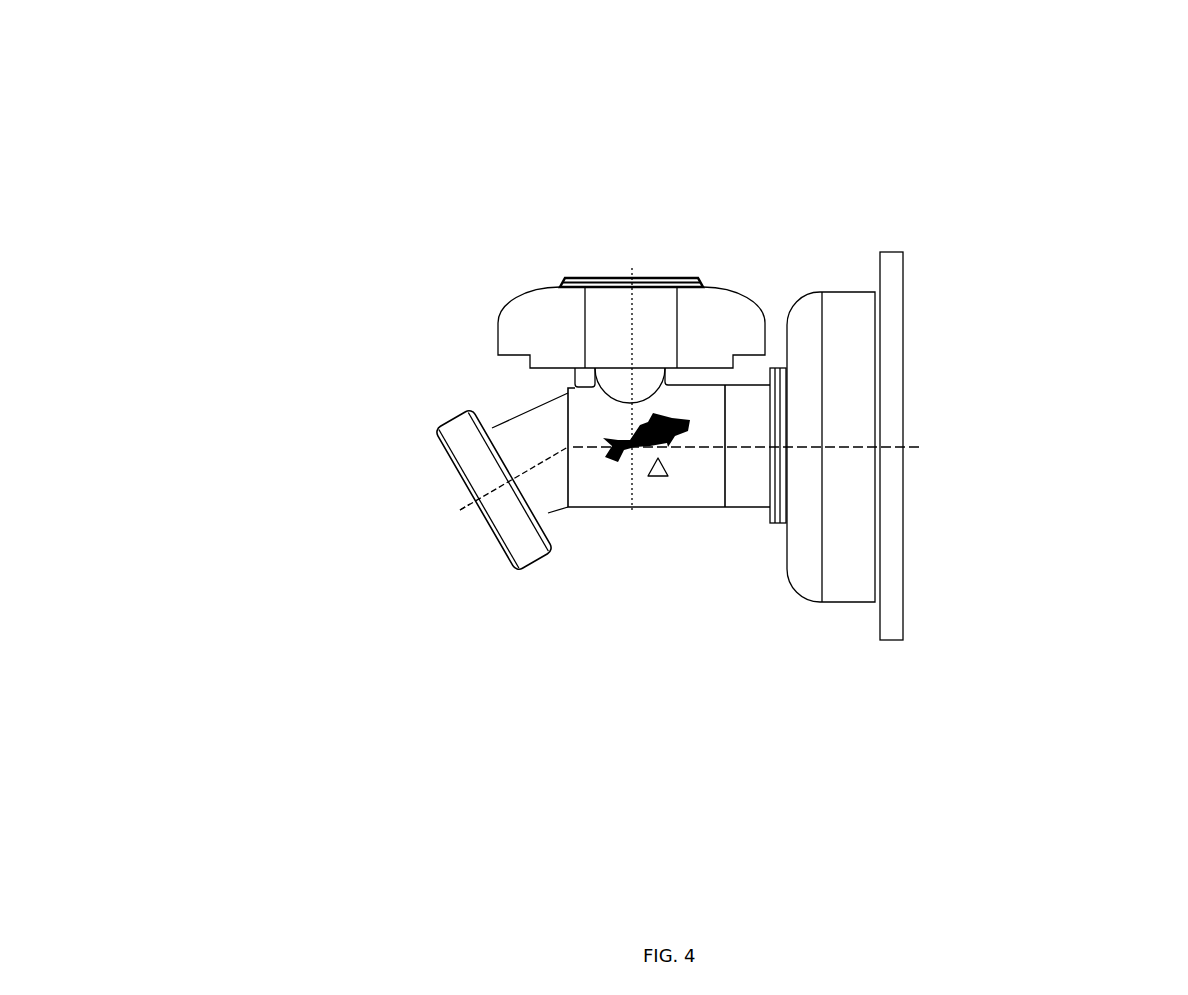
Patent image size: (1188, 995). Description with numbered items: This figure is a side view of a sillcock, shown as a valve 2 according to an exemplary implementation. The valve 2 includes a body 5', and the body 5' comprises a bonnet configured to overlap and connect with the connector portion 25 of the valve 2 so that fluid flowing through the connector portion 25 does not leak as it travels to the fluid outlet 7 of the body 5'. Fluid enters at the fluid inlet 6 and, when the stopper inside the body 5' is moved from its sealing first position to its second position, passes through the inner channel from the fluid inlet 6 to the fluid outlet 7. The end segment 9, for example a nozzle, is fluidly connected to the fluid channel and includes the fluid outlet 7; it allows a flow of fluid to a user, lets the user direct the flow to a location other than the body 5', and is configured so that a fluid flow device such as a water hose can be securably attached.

The valve 2 is at (289, 156).
The body 5' is at (668, 609).
The fluid inlet 6 is at (943, 396).
The fluid outlet 7 is at (433, 579).
The end segment 9 is at (457, 435).
The connector portion 25 is at (855, 602).